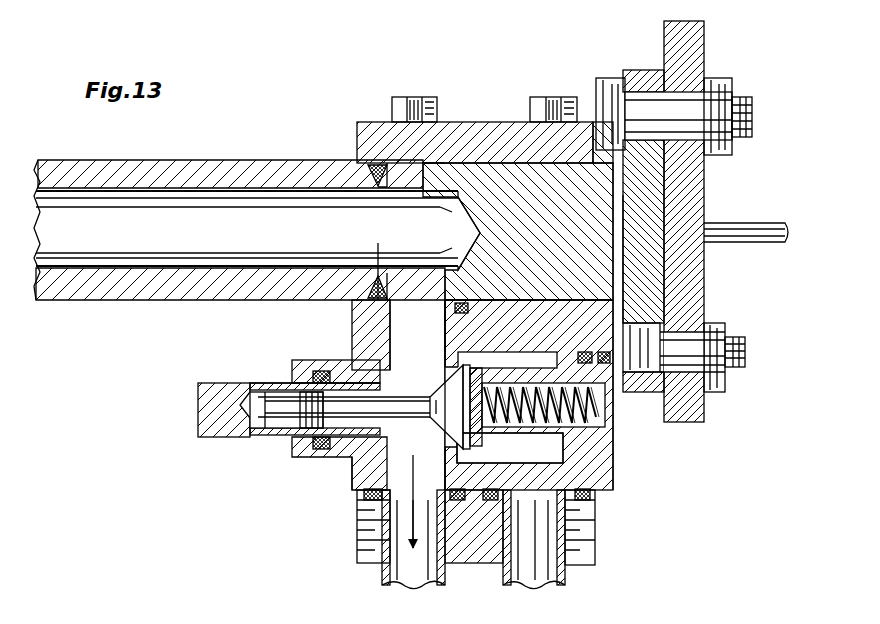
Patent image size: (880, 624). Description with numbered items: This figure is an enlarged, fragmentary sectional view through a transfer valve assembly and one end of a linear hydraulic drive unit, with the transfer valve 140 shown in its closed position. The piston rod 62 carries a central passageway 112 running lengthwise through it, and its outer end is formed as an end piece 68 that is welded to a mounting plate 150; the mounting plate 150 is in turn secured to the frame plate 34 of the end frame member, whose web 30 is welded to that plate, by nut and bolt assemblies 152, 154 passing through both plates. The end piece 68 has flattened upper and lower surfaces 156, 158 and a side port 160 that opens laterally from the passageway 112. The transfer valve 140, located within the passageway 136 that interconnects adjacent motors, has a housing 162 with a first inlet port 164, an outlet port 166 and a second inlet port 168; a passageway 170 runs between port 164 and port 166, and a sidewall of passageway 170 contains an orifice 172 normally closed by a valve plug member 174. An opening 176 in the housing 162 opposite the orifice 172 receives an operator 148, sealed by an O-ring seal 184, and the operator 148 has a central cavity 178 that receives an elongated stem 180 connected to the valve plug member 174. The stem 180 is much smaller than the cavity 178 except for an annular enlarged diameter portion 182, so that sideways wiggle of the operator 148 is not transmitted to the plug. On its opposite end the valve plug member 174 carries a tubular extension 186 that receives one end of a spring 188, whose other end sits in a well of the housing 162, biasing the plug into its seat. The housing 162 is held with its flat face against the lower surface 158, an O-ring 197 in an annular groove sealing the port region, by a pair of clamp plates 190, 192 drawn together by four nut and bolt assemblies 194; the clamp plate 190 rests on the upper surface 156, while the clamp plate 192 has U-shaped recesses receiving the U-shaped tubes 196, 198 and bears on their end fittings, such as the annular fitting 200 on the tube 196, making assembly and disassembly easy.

The web 30 is at (776, 243).
The plate 34 is at (666, 38).
The piston rod 62 is at (150, 300).
The end piece 68 is at (497, 190).
The central passageway 112 is at (92, 248).
The passageway 136 is at (392, 574).
The transfer valve 140 is at (634, 494).
The operator 148 is at (198, 412).
The mounting plate 150 is at (650, 205).
The nut and bolt assembly 152 is at (678, 98).
The nut and bolt assembly 154 is at (680, 415).
The flattened upper surface 156 is at (440, 163).
The flattened lower surface 158 is at (446, 342).
The side port 160 is at (415, 270).
The housing 162 is at (363, 510).
The first inlet port 164 is at (352, 306).
The outlet port 166 is at (368, 525).
The second inlet port 168 is at (598, 495).
The passageway 170 is at (400, 432).
The orifice 172 is at (448, 560).
The valve plug member 174 is at (447, 381).
The opening 176 is at (335, 360).
The central cavity 178 is at (262, 385).
The stem 180 is at (265, 435).
The enlarged diameter portion 182 is at (292, 432).
The O-ring seal 184 is at (350, 455).
The tubular extension 186 is at (615, 458).
The spring 188 is at (612, 437).
The clamp plate 190 is at (363, 142).
The clamp plate 192 is at (388, 565).
The nut and bolt assemblies 194 is at (410, 97).
The U-shaped tube 196 is at (397, 578).
The O-ring 197 is at (378, 285).
The U-shaped tube 198 is at (570, 590).
The annular fitting 200 is at (300, 527).